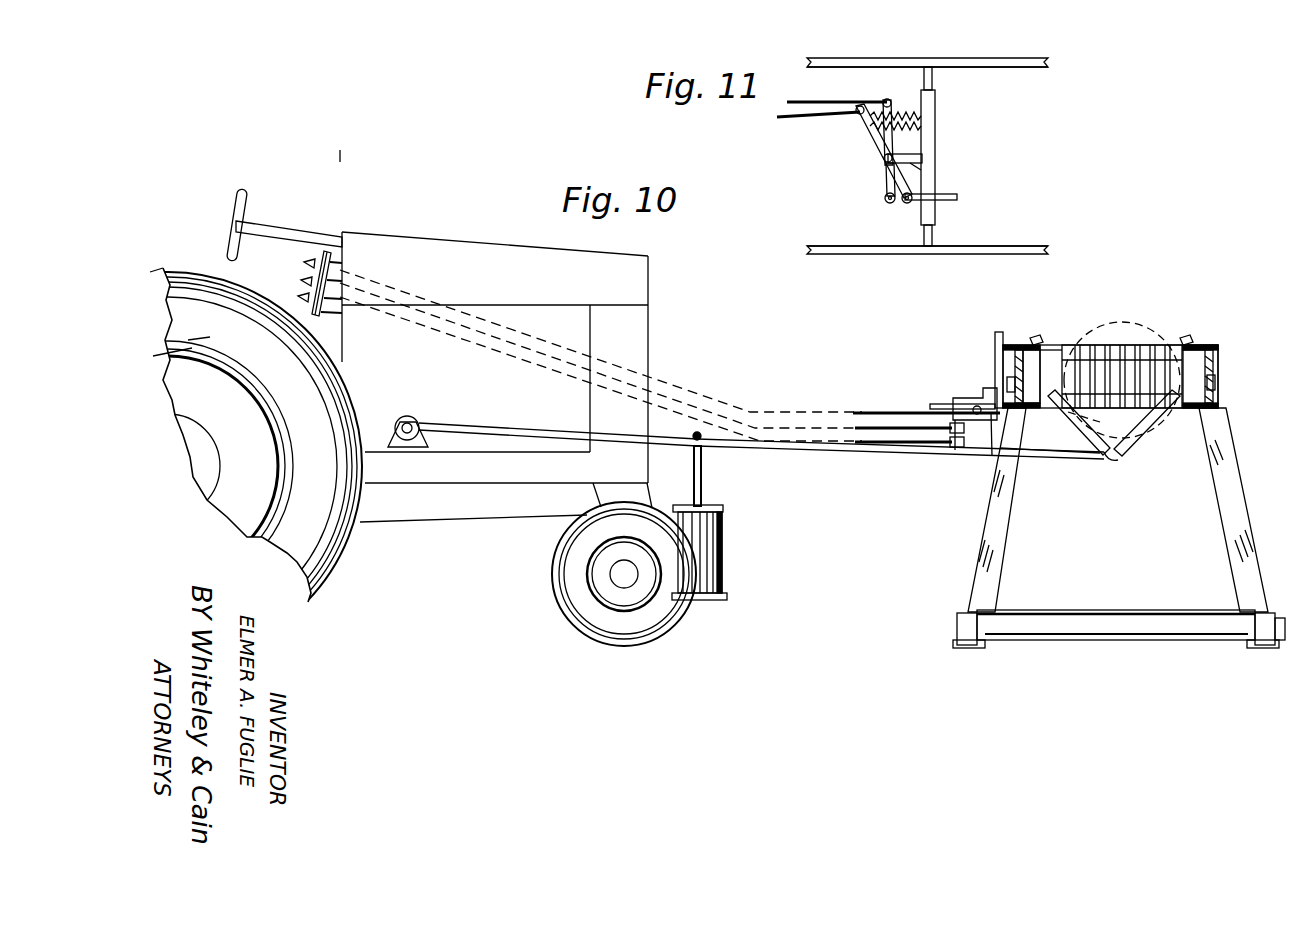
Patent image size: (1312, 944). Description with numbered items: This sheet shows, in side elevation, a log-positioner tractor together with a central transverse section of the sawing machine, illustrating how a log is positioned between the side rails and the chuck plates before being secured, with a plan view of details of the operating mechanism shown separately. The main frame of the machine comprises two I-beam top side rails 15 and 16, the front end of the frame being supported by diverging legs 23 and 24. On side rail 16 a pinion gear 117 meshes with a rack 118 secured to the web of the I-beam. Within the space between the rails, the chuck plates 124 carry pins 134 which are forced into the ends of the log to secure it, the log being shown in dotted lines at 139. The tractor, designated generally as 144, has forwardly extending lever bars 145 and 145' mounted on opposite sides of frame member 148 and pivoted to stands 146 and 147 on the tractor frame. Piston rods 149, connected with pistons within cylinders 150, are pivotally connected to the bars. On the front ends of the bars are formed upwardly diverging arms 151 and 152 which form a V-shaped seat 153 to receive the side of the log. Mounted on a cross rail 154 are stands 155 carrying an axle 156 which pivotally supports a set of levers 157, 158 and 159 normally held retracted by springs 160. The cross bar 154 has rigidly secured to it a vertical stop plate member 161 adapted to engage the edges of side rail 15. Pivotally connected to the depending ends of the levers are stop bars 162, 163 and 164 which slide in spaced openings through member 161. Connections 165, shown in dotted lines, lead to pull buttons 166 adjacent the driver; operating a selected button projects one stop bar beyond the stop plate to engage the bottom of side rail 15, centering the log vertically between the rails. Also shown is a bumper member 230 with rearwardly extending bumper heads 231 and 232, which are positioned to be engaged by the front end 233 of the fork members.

In FIG. 10, the top side rail 15 is at (1022, 350).
In FIG. 10, the top side rail 16 is at (1218, 362).
In FIG. 10, the front leg 23 is at (990, 540).
In FIG. 10, the front leg 24 is at (1242, 486).
In FIG. 10, the pinion gear 117 is at (999, 345).
In FIG. 10, the rack 118 is at (1215, 383).
In FIG. 10, the chuck plates 124 is at (1082, 410).
In FIG. 10, the pins 134 is at (1112, 352).
In FIG. 10, the log (dotted line position) 139 is at (1140, 326).
In FIG. 10, the tractor 144 is at (340, 208).
In FIG. 10, the lever bar 145 is at (900, 458).
In FIG. 11, the lever bar 145 is at (927, 232).
In FIG. 11, the lever bar 145' is at (927, 80).
In FIG. 10, the stand 146 is at (398, 446).
In FIG. 10, the stand 147 is at (416, 423).
In FIG. 10, the frame member 148 is at (428, 472).
In FIG. 10, the piston rod 149 is at (708, 485).
In FIG. 10, the cylinder 150 is at (718, 552).
In FIG. 10, the diverging arm 151 is at (1150, 420).
In FIG. 10, the diverging arm 152 is at (1090, 455).
In FIG. 10, the V-shaped seat 153 is at (1118, 448).
In FIG. 10, the cross rail 154 is at (990, 448).
In FIG. 11, the cross rail 154 is at (933, 236).
In FIG. 10, the stand 155 is at (977, 406).
In FIG. 11, the stand 155 is at (912, 166).
In FIG. 10, the axle 156 is at (960, 398).
In FIG. 11, the axle 156 is at (884, 160).
In FIG. 10, the lever 157 is at (944, 404).
In FIG. 11, the lever 157 is at (870, 140).
In FIG. 11, the lever 158 is at (897, 138).
In FIG. 10, the lever 159 is at (955, 450).
In FIG. 11, the spring 160 is at (905, 112).
In FIG. 10, the vertical stop plate member 161 is at (1003, 355).
In FIG. 11, the vertical stop plate member 161 is at (935, 122).
In FIG. 10, the stop bar 162 is at (1000, 420).
In FIG. 10, the stop bar 163 is at (985, 434).
In FIG. 10, the stop bar 164 is at (1005, 455).
In FIG. 11, the stop bar 164 is at (950, 200).
In FIG. 10, the connections 165 is at (690, 420).
In FIG. 11, the connections 165 is at (825, 116).
In FIG. 10, the pull buttons 166 is at (303, 292).
In FIG. 10, the bumper member 230 is at (1045, 345).
In FIG. 10, the bumper head 231 is at (1040, 338).
In FIG. 10, the bumper head 232 is at (1186, 336).
In FIG. 10, the front end of fork member 233 is at (1196, 340).